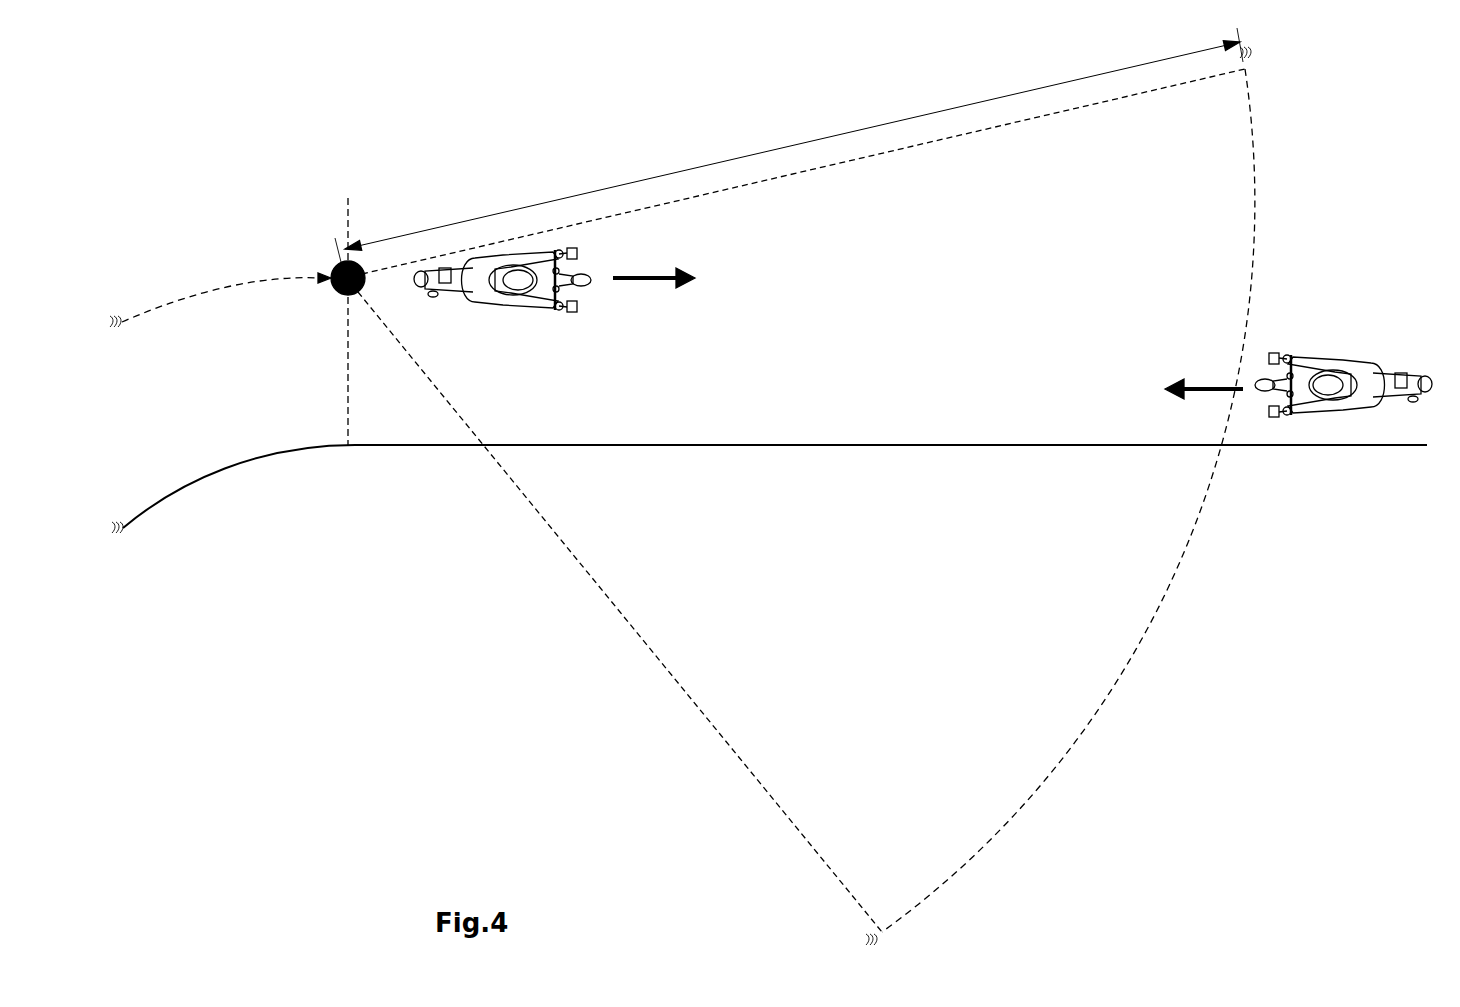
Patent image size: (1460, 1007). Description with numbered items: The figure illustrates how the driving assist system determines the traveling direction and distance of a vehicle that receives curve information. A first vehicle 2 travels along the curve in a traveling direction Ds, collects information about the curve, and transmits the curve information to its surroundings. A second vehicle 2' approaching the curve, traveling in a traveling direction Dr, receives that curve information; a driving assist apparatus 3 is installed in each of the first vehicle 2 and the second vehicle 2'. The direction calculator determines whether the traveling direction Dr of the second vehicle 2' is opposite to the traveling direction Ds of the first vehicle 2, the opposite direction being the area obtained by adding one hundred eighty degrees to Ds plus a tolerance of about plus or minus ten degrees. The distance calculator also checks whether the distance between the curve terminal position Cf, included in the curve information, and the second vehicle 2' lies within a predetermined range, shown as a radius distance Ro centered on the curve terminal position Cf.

The first vehicle 2 is at (502, 301).
The second vehicle 2' is at (1343, 371).
The driving assist apparatus 3 is at (449, 284).
The curve terminal position Cf is at (337, 290).
The traveling direction of the first vehicle Ds is at (648, 282).
The traveling direction of the second vehicle Dr is at (1218, 385).
The radius distance Ro is at (792, 146).